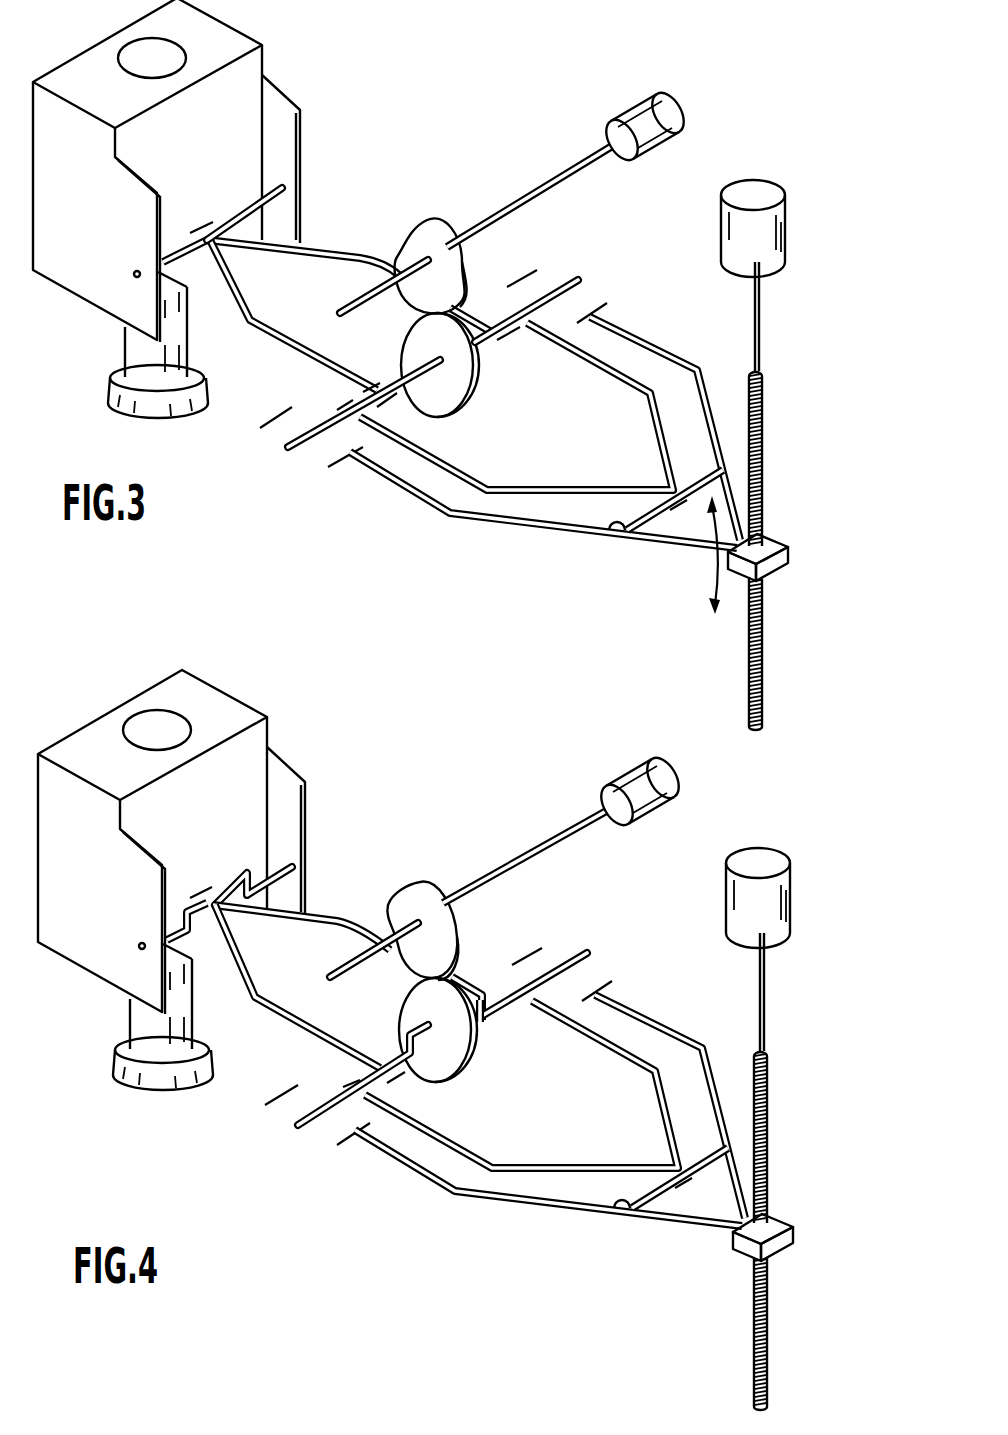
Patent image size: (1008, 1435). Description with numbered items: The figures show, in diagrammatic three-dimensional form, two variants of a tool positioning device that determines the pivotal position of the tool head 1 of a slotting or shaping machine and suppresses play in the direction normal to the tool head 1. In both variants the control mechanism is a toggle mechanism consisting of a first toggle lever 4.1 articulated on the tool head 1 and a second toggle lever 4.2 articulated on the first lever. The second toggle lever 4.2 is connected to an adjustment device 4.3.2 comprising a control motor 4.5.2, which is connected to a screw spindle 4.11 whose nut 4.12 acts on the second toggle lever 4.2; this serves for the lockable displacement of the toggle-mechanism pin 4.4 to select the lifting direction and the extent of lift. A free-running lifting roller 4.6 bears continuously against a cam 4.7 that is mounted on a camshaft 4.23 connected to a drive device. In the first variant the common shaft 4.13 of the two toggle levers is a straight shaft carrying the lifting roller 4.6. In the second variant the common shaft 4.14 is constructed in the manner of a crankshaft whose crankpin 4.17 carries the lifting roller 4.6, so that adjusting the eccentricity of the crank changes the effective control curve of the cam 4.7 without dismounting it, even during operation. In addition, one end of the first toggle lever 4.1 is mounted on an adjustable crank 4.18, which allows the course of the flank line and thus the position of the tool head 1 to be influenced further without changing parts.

In FIG. 3, the tool head 1 is at (50, 77).
In FIG. 4, the tool head 1 is at (67, 744).
In FIG. 3, the first toggle lever 4.1 is at (300, 280).
In FIG. 4, the first toggle lever 4.1 is at (268, 997).
In FIG. 3, the second toggle lever 4.2 is at (577, 357).
In FIG. 4, the second toggle lever 4.2 is at (610, 1040).
In FIG. 3, the adjustment device 4.3.2 is at (665, 362).
In FIG. 4, the adjustment device 4.3.2 is at (670, 1040).
In FIG. 3, the toggle-mechanism pin 4.4 is at (600, 533).
In FIG. 4, the toggle-mechanism pin 4.4 is at (608, 1210).
In FIG. 3, the control motor 4.5.2 is at (765, 190).
In FIG. 4, the control motor 4.5.2 is at (765, 857).
In FIG. 3, the lifting roller 4.6 is at (410, 341).
In FIG. 4, the lifting roller 4.6 is at (412, 1006).
In FIG. 3, the cam 4.7 is at (421, 236).
In FIG. 4, the cam 4.7 is at (418, 895).
In FIG. 3, the screw spindle 4.11 is at (763, 438).
In FIG. 4, the screw spindle 4.11 is at (767, 1120).
In FIG. 3, the nut 4.12 is at (773, 562).
In FIG. 4, the nut 4.12 is at (778, 1243).
In FIG. 3, the common shaft 4.13 is at (310, 442).
In FIG. 4, the common shaft 4.14 is at (573, 947).
In FIG. 4, the crankpin 4.17 is at (432, 1043).
In FIG. 4, the adjustable crank 4.18 is at (237, 877).
In FIG. 3, the camshaft 4.23 is at (553, 185).
In FIG. 4, the camshaft 4.23 is at (543, 847).